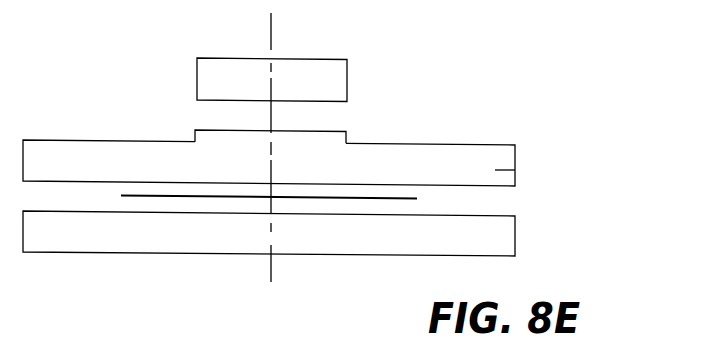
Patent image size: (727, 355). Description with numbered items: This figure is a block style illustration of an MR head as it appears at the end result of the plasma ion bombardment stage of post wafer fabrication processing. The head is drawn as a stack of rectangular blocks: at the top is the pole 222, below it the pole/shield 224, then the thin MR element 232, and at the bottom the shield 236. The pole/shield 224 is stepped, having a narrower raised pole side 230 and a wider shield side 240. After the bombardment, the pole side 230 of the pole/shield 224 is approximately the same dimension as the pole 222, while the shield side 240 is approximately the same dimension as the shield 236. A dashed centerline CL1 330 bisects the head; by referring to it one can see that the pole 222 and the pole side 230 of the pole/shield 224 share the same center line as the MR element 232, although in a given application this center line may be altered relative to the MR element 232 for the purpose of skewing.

The centerline 330 is at (271, 31).
The centerline CL1 is at (271, 17).
The pole 222 is at (347, 63).
The pole/shield 224 is at (515, 155).
The pole side 230 is at (347, 133).
The shield side 240 is at (515, 170).
The MR element 232 is at (403, 199).
The shield 236 is at (515, 235).